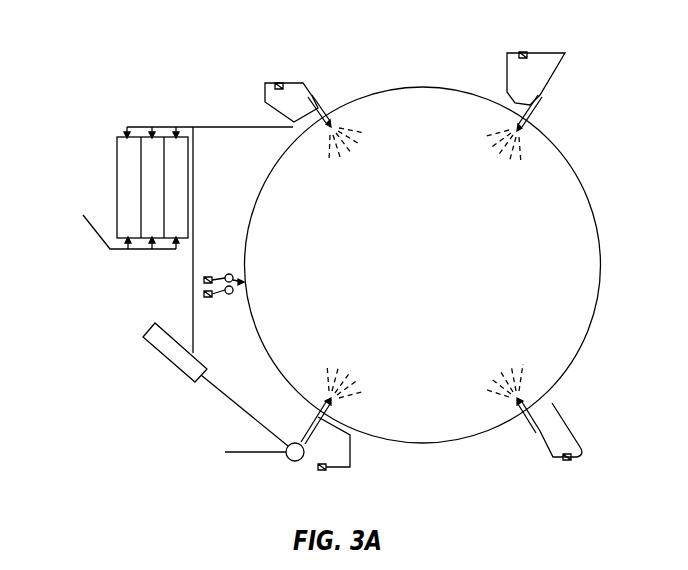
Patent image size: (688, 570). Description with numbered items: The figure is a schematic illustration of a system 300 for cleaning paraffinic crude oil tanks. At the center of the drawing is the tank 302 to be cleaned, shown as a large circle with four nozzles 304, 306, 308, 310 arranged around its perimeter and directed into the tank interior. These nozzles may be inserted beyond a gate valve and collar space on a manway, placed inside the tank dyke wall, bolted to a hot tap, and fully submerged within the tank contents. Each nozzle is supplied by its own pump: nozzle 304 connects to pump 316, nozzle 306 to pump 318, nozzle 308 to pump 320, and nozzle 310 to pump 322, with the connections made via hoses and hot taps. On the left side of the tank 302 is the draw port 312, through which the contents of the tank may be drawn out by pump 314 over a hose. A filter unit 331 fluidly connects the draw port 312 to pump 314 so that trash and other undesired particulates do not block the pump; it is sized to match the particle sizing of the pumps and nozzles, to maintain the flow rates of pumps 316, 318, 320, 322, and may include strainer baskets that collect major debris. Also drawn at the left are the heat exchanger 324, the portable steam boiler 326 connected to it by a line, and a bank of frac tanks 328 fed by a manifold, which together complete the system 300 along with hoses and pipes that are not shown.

The system 300 is at (135, 40).
The tank 302 is at (440, 273).
The nozzle 304 is at (316, 424).
The nozzle 306 is at (530, 426).
The nozzle 308 is at (320, 106).
The nozzle 310 is at (536, 102).
The draw port 312 is at (228, 273).
The pump 314 is at (209, 299).
The pump 316 is at (325, 472).
The pump 318 is at (568, 462).
The pump 320 is at (527, 52).
The pump 322 is at (277, 84).
The heat exchanger 324 is at (240, 452).
The portable steam boiler 326 is at (160, 358).
The frac tanks 328 is at (90, 228).
The filter unit 331 is at (242, 277).